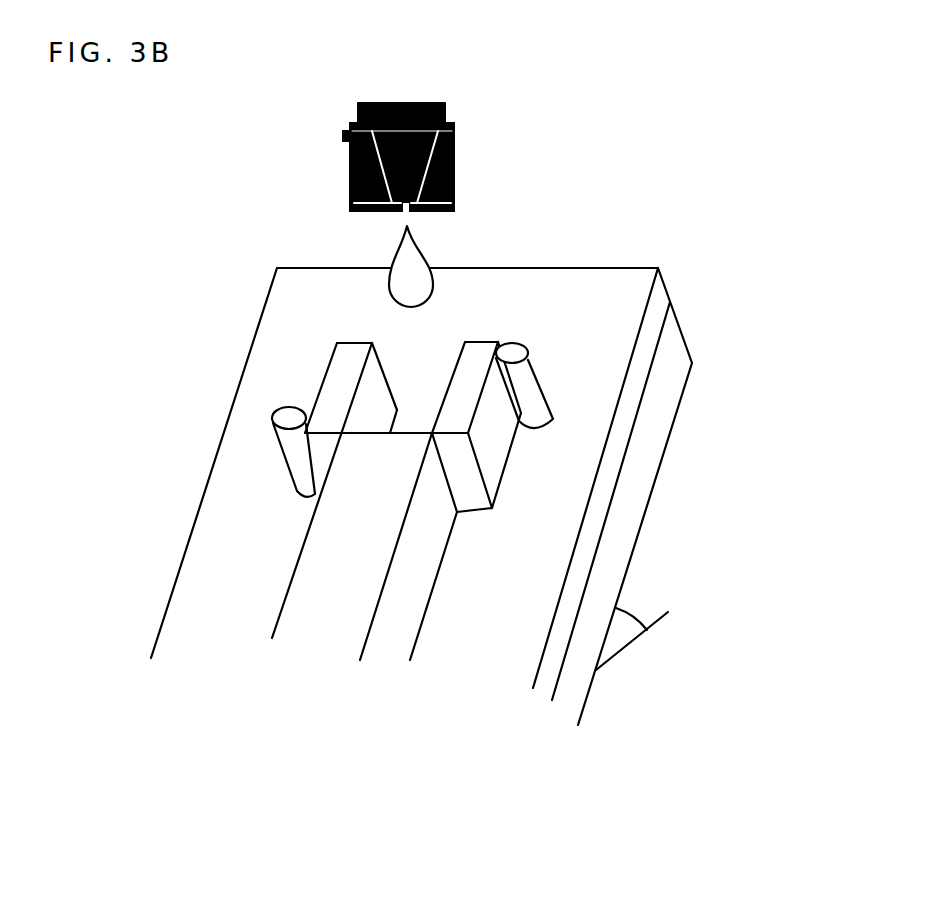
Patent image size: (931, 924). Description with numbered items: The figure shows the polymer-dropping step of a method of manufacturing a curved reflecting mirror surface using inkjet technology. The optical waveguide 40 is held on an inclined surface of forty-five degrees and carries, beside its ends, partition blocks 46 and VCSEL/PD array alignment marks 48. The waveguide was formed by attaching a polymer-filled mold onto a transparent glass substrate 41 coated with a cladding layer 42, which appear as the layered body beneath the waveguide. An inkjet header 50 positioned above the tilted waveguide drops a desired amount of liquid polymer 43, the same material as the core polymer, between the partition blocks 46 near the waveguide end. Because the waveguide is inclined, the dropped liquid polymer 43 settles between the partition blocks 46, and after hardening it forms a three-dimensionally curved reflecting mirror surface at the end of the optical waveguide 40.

The optical waveguide 40 is at (281, 604).
The transparent glass substrate 41 is at (642, 496).
The cladding layer 42 is at (638, 403).
The liquid polymer 43 is at (385, 281).
The partition block 46 is at (325, 383).
The VCSEL/PD array alignment mark 48 is at (282, 449).
The inkjet header 50 is at (466, 163).